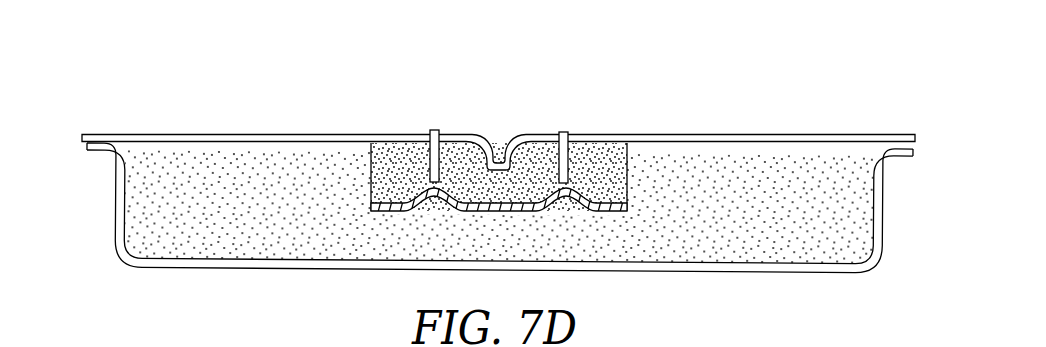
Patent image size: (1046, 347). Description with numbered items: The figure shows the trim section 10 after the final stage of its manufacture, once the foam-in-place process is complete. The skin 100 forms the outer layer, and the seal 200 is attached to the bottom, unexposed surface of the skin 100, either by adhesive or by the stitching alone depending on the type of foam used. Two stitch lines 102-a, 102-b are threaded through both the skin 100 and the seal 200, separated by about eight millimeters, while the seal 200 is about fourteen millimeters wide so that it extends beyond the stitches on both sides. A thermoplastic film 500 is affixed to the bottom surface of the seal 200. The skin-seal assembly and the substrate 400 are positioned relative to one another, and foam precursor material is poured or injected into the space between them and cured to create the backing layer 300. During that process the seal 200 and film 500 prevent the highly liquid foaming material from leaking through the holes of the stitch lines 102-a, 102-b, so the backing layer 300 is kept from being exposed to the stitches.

The trim section 10 is at (113, 271).
The skin 100 is at (240, 134).
The stitch line 102-a is at (435, 130).
The stitch line 102-b is at (563, 132).
The seal 200 is at (592, 160).
The backing layer 300 is at (792, 240).
The substrate 400 is at (208, 268).
The film 500 is at (608, 204).